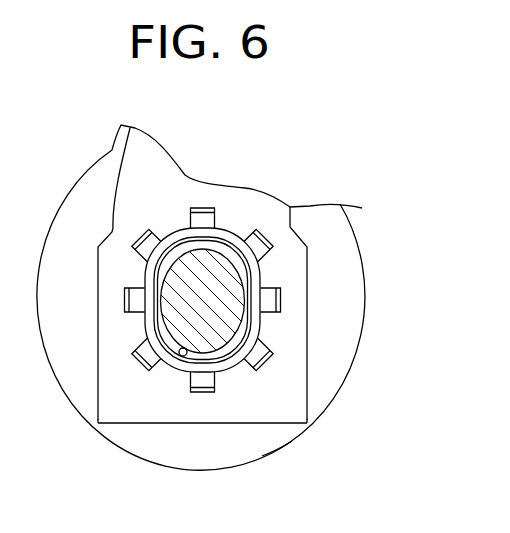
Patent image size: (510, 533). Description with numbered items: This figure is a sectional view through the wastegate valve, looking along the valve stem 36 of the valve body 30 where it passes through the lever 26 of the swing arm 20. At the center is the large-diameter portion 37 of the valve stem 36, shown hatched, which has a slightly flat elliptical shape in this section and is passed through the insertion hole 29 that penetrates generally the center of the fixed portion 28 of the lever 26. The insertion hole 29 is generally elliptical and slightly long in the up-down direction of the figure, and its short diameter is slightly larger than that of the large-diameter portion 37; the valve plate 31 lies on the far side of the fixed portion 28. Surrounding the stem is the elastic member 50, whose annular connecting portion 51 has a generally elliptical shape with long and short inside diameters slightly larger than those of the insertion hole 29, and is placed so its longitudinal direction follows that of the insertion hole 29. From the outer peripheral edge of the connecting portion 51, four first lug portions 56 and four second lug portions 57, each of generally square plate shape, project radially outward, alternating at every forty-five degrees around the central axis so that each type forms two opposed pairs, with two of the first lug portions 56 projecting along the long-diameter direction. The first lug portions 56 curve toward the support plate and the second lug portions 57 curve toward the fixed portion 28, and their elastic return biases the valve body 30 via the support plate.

The swing arm 20 is at (98, 331).
The lever 26 is at (198, 458).
The fixed portion 28 is at (120, 424).
The insertion hole 29 is at (182, 358).
The valve body 30 is at (253, 463).
The valve plate 31 is at (278, 450).
The valve stem 36 is at (232, 300).
The large-diameter portion 37 is at (255, 268).
The elastic member 50 is at (122, 236).
The connecting portion 51 is at (228, 372).
The first lug portions 56 is at (199, 208).
The second lug portions 57 is at (142, 230).